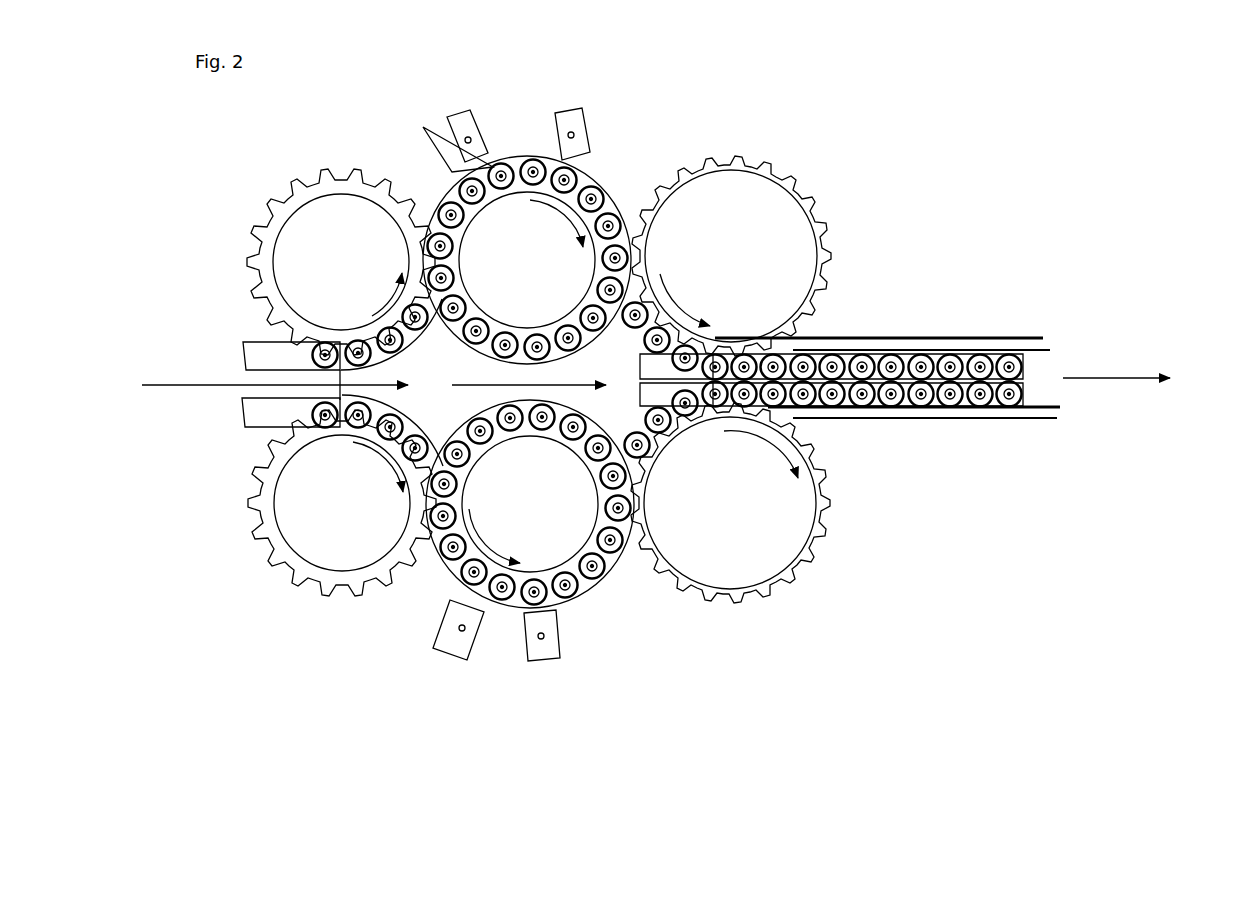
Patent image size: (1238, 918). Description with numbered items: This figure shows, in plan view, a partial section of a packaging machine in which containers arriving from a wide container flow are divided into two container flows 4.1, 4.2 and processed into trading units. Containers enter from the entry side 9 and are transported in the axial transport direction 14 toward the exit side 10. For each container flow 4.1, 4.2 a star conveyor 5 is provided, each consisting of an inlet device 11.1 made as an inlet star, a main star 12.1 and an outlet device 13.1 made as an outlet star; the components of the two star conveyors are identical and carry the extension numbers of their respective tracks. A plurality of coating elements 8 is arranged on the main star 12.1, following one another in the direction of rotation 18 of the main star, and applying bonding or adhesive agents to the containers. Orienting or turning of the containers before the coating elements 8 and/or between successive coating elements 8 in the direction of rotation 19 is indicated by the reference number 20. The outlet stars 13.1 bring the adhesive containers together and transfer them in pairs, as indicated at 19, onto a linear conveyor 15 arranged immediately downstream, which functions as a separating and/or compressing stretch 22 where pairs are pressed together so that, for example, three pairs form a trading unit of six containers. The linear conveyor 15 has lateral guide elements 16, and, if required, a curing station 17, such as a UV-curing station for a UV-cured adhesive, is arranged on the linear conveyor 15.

The container flow 4.1 is at (256, 413).
The container flow 4.2 is at (266, 356).
The star conveyor 5 is at (396, 143).
The coating element 8 is at (450, 118).
The entry side 9 is at (261, 386).
The exit side 10 is at (1197, 380).
The inlet device 11.1 is at (325, 540).
The main star 12.1 is at (560, 540).
The outlet device 13.1 is at (767, 558).
The axial transport direction 14 is at (797, 377).
The linear conveyor 15 is at (1033, 392).
The lateral guide element 16 is at (963, 414).
The curing station 17 is at (943, 398).
The direction of rotation 18 is at (556, 223).
The direction of rotation 19 is at (810, 342).
The orienting or turning 20 is at (423, 127).
The separating and/or compressing stretch 22 is at (858, 365).